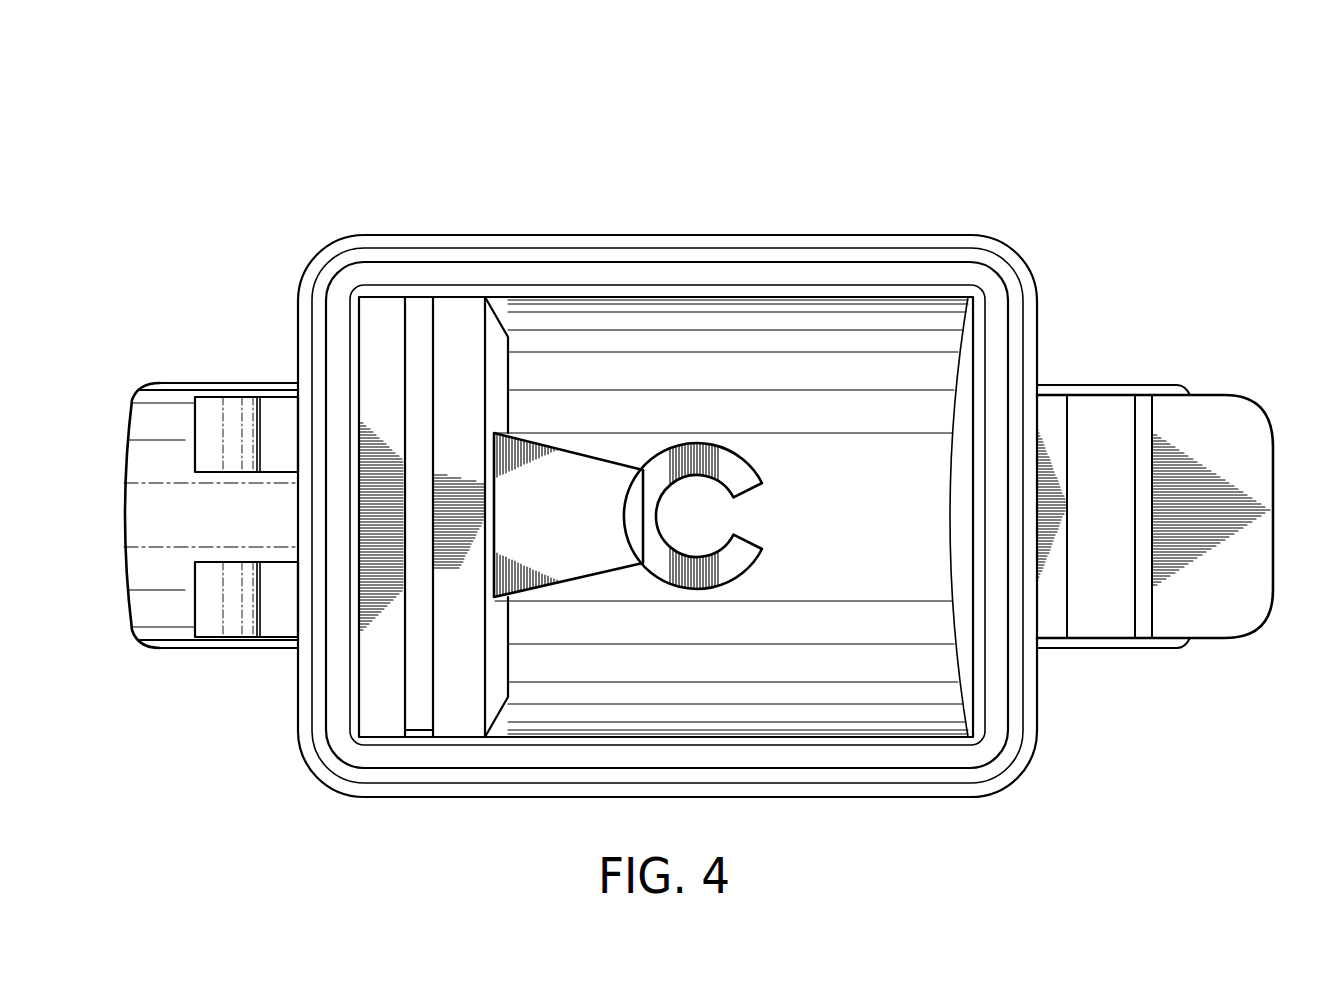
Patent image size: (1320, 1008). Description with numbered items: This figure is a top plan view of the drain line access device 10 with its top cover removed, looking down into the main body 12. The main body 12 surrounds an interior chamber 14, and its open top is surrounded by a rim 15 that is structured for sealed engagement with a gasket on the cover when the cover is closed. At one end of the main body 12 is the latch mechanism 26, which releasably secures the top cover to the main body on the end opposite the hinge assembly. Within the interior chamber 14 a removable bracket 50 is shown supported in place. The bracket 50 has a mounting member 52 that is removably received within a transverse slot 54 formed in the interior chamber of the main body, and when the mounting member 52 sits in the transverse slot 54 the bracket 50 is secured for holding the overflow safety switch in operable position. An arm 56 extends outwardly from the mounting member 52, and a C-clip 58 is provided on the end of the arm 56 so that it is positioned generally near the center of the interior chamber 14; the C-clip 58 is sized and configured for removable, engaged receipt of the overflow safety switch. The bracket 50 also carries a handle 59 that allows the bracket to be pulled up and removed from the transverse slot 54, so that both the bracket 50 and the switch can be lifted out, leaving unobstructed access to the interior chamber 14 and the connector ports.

The access device 10 is at (419, 150).
The main body 12 is at (656, 204).
The interior chamber 14 is at (797, 330).
The rim 15 is at (918, 275).
The latch mechanism 26 is at (1188, 425).
The bracket 50 is at (502, 388).
The mounting member 52 is at (383, 358).
The transverse slot 54 is at (386, 297).
The arm 56 is at (597, 465).
The C-clip 58 is at (755, 470).
The handle 59 is at (457, 330).